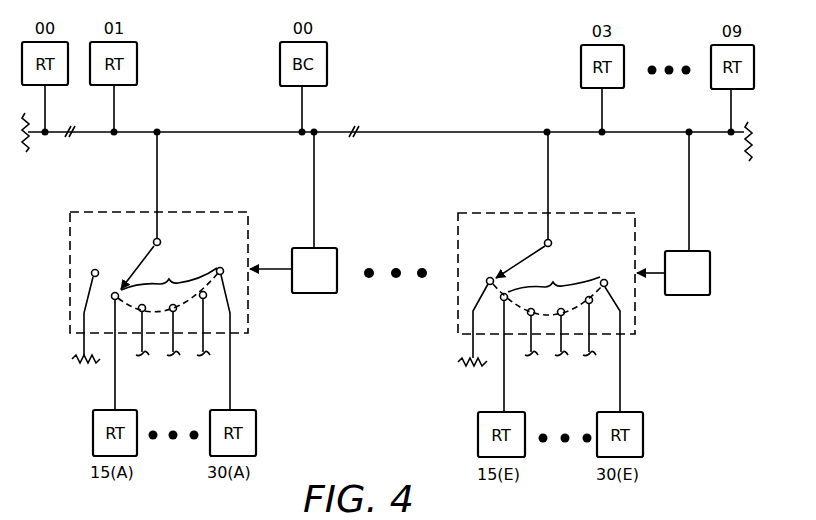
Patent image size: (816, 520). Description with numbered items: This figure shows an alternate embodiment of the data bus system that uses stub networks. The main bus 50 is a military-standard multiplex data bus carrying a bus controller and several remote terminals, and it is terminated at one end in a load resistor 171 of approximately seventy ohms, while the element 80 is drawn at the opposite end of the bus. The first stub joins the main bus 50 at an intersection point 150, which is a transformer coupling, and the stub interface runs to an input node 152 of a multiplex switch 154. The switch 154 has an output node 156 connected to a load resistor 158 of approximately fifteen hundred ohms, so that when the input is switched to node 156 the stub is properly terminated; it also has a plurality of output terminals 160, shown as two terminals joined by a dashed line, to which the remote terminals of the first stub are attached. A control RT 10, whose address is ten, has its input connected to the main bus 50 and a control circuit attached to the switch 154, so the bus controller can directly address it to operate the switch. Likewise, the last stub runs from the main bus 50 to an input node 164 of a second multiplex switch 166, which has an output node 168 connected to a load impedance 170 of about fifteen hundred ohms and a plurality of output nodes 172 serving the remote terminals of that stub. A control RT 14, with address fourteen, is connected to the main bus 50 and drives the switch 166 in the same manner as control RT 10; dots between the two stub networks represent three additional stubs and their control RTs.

The control RT 10 is at (295, 212).
The control RT 14 is at (678, 213).
The main bus 50 is at (230, 131).
The bus terminator 80 is at (28, 142).
The intersection point 150 is at (158, 128).
The input node 152 is at (160, 240).
The multiplex switch 154 is at (70, 214).
The output node 156 is at (108, 247).
The load resistor 158 is at (88, 363).
The output terminals 160 is at (171, 335).
The input node 164 is at (552, 246).
The multiplex switch 166 is at (458, 215).
The output node 168 is at (487, 273).
The load impedance 170 is at (480, 366).
The load resistor 171 is at (746, 148).
The output nodes 172 is at (556, 338).